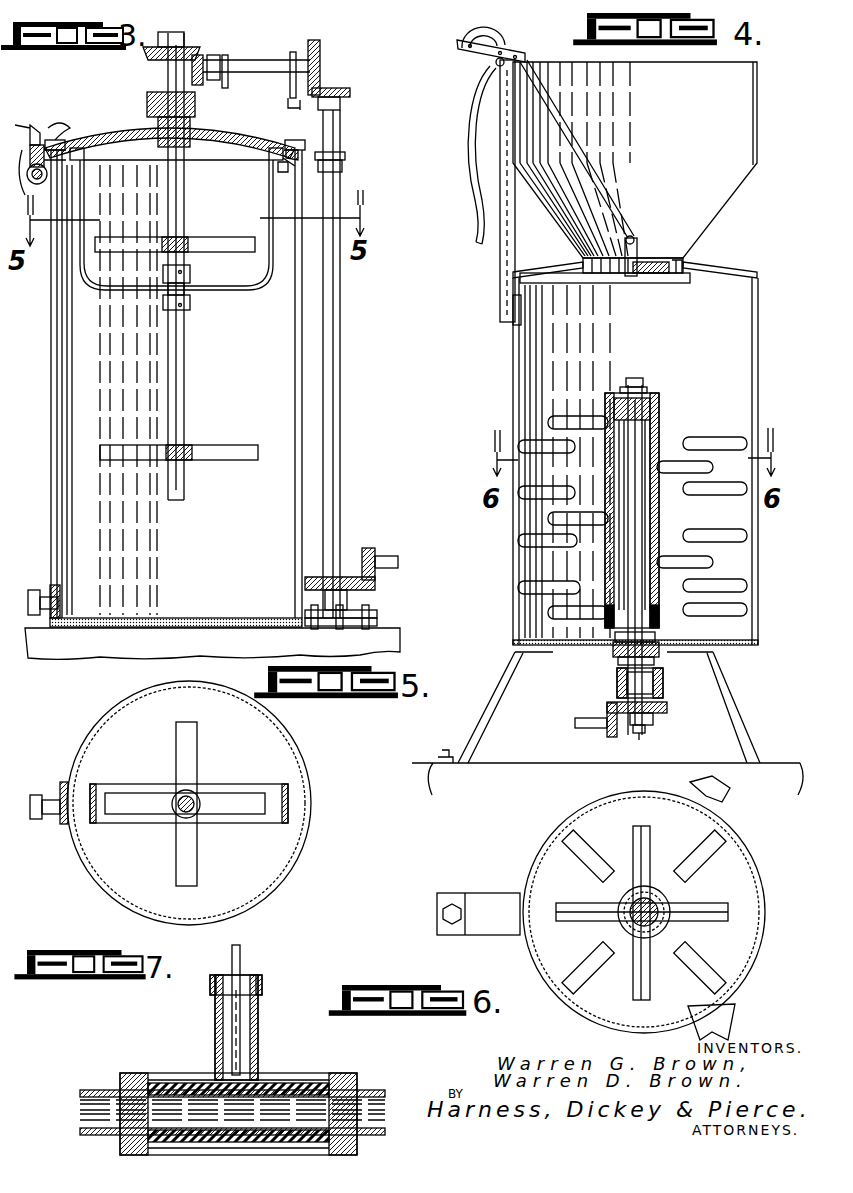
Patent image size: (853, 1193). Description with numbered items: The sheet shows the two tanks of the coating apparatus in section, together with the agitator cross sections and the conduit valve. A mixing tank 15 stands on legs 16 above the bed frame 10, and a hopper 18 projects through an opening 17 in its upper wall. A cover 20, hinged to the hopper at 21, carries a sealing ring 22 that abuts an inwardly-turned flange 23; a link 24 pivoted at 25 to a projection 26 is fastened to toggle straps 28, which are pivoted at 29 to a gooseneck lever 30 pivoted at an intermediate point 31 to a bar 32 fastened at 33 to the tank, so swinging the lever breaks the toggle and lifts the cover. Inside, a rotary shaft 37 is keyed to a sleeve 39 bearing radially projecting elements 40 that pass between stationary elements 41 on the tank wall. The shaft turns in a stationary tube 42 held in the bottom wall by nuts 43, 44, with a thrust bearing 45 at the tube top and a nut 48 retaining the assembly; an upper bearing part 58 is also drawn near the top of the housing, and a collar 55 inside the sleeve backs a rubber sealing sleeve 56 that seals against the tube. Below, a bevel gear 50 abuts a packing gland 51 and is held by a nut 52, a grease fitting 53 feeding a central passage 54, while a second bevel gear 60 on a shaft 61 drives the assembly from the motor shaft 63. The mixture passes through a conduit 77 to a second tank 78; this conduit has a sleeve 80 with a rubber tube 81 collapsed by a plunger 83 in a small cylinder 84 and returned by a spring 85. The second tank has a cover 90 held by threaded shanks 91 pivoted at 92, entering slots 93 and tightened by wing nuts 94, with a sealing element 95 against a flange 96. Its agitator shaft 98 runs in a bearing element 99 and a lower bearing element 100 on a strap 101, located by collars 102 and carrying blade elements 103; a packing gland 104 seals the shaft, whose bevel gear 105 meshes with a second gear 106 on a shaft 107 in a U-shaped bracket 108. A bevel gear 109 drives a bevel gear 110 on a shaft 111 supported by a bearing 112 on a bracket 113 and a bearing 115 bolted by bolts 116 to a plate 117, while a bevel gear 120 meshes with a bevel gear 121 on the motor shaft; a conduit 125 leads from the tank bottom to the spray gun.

In FIG. 3, the bed frame 10 is at (388, 645).
In FIG. 4, the bed frame 10 is at (412, 763).
In FIG. 4, the mixing tank 15 is at (758, 368).
In FIG. 6, the mixing tank 15 is at (762, 866).
In FIG. 4, the legs 16 is at (692, 668).
In FIG. 6, the legs 16 is at (505, 893).
In FIG. 4, the opening 17 is at (688, 272).
In FIG. 4, the hopper 18 is at (700, 242).
In FIG. 4, the cover 20 is at (600, 284).
In FIG. 4, the pivotal connection 21 is at (580, 284).
In FIG. 4, the sealing ring 22 is at (678, 284).
In FIG. 4, the inwardly-turned flange 23 is at (676, 262).
In FIG. 4, the link 24 is at (568, 135).
In FIG. 4, the pivotal connection 25 is at (632, 236).
In FIG. 4, the projection 26 is at (625, 250).
In FIG. 4, the toggle straps 28 is at (517, 52).
In FIG. 4, the pivotal connection 29 is at (462, 46).
In FIG. 4, the gooseneck lever 30 is at (470, 176).
In FIG. 4, the intermediate pivot point 31 is at (495, 66).
In FIG. 4, the bar 32 is at (500, 268).
In FIG. 4, the fastening 33 is at (520, 322).
In FIG. 4, the rotary shaft 37 is at (643, 440).
In FIG. 6, the rotary shaft 37 is at (660, 923).
In FIG. 4, the sleeve 39 is at (650, 396).
In FIG. 4, the radially projecting elements 40 is at (696, 453).
In FIG. 6, the radially projecting elements 40 is at (576, 903).
In FIG. 4, the stationary elements 41 is at (708, 538).
In FIG. 6, the stationary elements 41 is at (578, 840).
In FIG. 4, the stationary tube 42 is at (618, 661).
In FIG. 4, the threaded nut 43 is at (615, 653).
In FIG. 4, the threaded nut 44 is at (613, 643).
In FIG. 4, the thrust bearing 45 is at (660, 406).
In FIG. 4, the nut 48 is at (640, 380).
In FIG. 4, the bevel gear 50 is at (665, 712).
In FIG. 4, the packing gland 51 is at (664, 690).
In FIG. 4, the nut 52 is at (653, 724).
In FIG. 4, the grease fitting 53 is at (637, 738).
In FIG. 4, the central passage 54 is at (617, 688).
In FIG. 4, the collar 55 is at (607, 580).
In FIG. 4, the rubber sealing sleeve 56 is at (662, 618).
In FIG. 4, the upper bearing 58 is at (610, 393).
In FIG. 4, the second bevel gear 60 is at (607, 732).
In FIG. 4, the shaft 61 is at (575, 724).
In FIG. 3, the motor shaft 63 is at (398, 560).
In FIG. 7, the conduit 77 is at (370, 1090).
In FIG. 3, the second tank 78 is at (302, 435).
In FIG. 5, the second tank 78 is at (300, 762).
In FIG. 7, the sleeve 80 is at (286, 1075).
In FIG. 7, the rubber tube 81 is at (265, 1142).
In FIG. 7, the plunger 83 is at (245, 1032).
In FIG. 7, the small cylinder 84 is at (262, 1000).
In FIG. 7, the spring 85 is at (215, 1040).
In FIG. 3, the cover 90 is at (300, 150).
In FIG. 3, the threaded shank 91 is at (30, 180).
In FIG. 3, the pivotal connection 92 is at (45, 172).
In FIG. 3, the slot 93 is at (38, 128).
In FIG. 3, the wing nut 94 is at (62, 130).
In FIG. 3, the sealing element 95 is at (298, 158).
In FIG. 3, the flange 96 is at (290, 163).
In FIG. 3, the shaft 98 is at (185, 370).
In FIG. 5, the shaft 98 is at (178, 812).
In FIG. 3, the bearing element 99 is at (195, 130).
In FIG. 3, the lower bearing element 100 is at (168, 291).
In FIG. 3, the strap 101 is at (246, 290).
In FIG. 5, the strap 101 is at (278, 826).
In FIG. 3, the collars 102 is at (163, 273).
In FIG. 3, the blade elements 103 is at (212, 250).
In FIG. 5, the blade elements 103 is at (232, 802).
In FIG. 3, the packing gland 104 is at (147, 105).
In FIG. 3, the bevel gear 105 is at (195, 50).
In FIG. 3, the second gear 106 is at (205, 65).
In FIG. 3, the shaft 107 is at (240, 75).
In FIG. 3, the U-shaped bracket 108 is at (295, 108).
In FIG. 3, the bevel gear 109 is at (322, 45).
In FIG. 3, the bevel gear 110 is at (350, 93).
In FIG. 3, the shaft 111 is at (340, 280).
In FIG. 3, the bearing 112 is at (348, 158).
In FIG. 3, the bracket 113 is at (345, 170).
In FIG. 3, the bearing 115 is at (372, 600).
In FIG. 3, the bolts 116 is at (372, 614).
In FIG. 3, the plate 117 is at (377, 625).
In FIG. 3, the bevel gear 120 is at (305, 582).
In FIG. 3, the bevel gear 121 is at (372, 552).
In FIG. 3, the conduit 125 is at (38, 590).
In FIG. 5, the conduit 125 is at (42, 795).